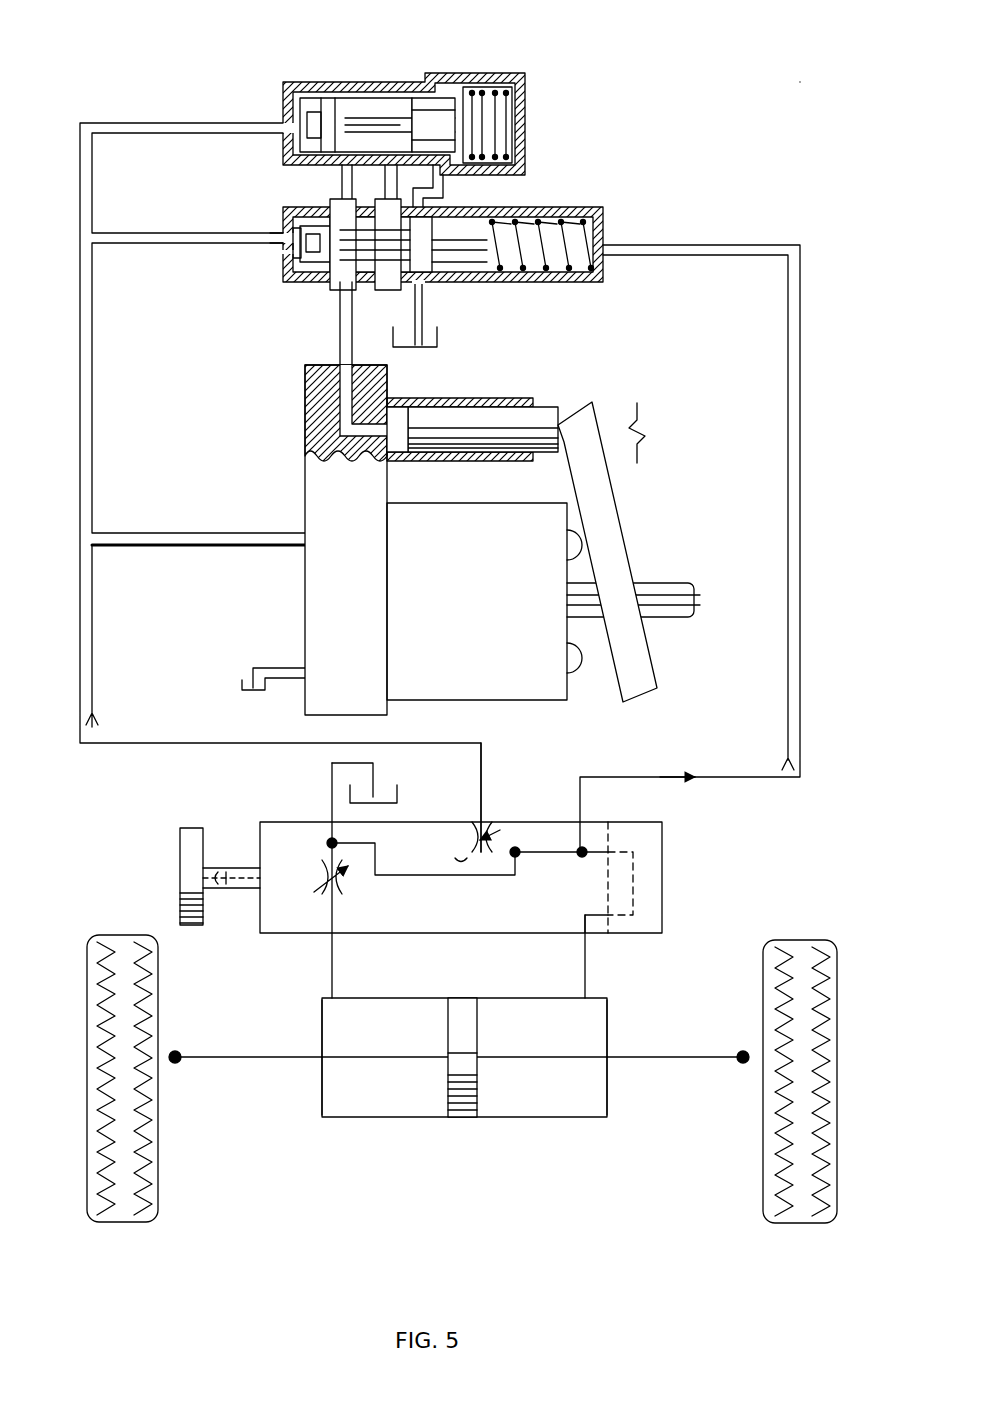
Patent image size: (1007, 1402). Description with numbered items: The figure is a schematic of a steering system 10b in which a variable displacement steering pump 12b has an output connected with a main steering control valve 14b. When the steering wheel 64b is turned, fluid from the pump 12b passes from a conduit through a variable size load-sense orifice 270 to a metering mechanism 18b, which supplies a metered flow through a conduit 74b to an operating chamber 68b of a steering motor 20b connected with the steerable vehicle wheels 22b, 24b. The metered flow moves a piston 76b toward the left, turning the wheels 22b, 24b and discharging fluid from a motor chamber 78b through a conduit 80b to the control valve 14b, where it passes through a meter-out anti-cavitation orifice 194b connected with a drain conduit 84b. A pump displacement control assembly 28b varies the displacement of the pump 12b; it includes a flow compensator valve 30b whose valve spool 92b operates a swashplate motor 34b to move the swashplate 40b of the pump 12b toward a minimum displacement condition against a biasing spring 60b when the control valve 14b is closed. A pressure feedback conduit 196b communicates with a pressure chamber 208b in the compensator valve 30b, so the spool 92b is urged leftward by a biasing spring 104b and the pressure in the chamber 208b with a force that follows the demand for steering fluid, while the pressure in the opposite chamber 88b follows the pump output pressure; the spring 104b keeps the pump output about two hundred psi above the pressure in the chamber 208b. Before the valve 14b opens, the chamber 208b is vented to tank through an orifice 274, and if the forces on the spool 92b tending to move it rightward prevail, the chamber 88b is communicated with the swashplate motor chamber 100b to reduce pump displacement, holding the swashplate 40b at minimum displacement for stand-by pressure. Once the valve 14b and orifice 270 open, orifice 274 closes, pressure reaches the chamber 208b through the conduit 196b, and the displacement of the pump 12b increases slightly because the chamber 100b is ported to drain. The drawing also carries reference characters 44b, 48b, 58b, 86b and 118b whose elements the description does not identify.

The steering system 10b is at (800, 82).
The variable displacement steering pump 12b is at (660, 718).
The main steering control valve 14b is at (272, 945).
The metering mechanism 18b is at (662, 876).
The steering motor 20b is at (615, 1032).
The steerable vehicle wheel 22b is at (104, 1048).
The steerable vehicle wheel 24b is at (815, 1080).
The pump displacement control assembly 28b is at (648, 32).
The flow compensator valve 30b is at (625, 214).
The swashplate motor 34b is at (576, 390).
The swashplate 40b is at (600, 492).
The engine 44b is at (481, 606).
The output shaft 48b is at (702, 604).
The actuating cylinder 58b is at (498, 445).
The biasing spring 60b is at (634, 406).
The steering wheel 64b is at (180, 872).
The operating chamber 68b is at (588, 1090).
The conduit 74b is at (585, 966).
The piston 76b is at (461, 1118).
The motor chamber 78b is at (338, 1088).
The conduit 80b is at (333, 960).
The drain conduit 84b is at (332, 800).
The conduit 86b is at (397, 798).
The chamber 88b is at (283, 266).
The valve spool 92b is at (470, 245).
The swashplate motor chamber 100b is at (396, 442).
The biasing spring 104b is at (488, 283).
The pilot valve 118b is at (528, 44).
The meter-out anti-cavitation orifice 194b is at (325, 889).
The pressure feedback conduit 196b is at (800, 432).
The pressure chamber 208b is at (584, 287).
The variable size load-sense orifice 270 is at (470, 838).
The orifice 274 is at (458, 878).